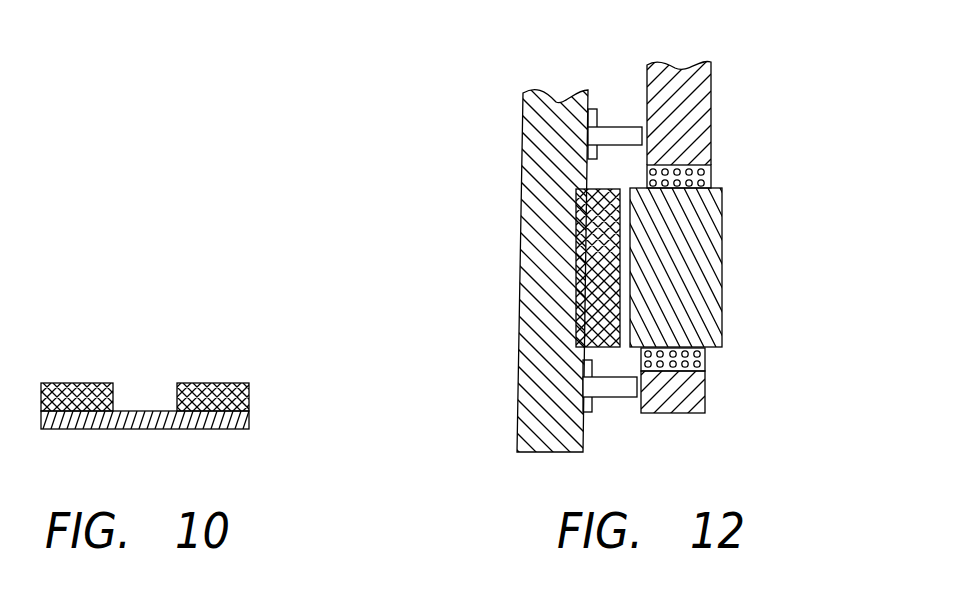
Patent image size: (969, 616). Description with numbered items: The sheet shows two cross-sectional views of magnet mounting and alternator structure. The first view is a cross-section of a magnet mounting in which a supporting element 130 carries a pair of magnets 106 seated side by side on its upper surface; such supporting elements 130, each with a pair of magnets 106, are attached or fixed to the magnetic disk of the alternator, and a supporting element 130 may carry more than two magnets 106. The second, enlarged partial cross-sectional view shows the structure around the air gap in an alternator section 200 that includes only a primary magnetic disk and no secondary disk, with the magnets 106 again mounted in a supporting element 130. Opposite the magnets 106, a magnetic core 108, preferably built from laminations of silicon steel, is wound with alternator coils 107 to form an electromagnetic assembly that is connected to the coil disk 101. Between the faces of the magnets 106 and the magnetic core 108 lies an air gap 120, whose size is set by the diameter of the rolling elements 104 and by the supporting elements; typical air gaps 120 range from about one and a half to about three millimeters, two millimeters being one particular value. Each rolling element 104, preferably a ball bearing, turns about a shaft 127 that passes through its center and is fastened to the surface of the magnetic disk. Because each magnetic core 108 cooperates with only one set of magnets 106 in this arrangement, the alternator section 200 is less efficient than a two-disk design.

In FIG. 12, the alternator section 200 is at (581, 295).
In FIG. 12, the coil disk 101 is at (712, 110).
In FIG. 12, the rolling element 104 is at (612, 124).
In FIG. 10, the magnet 106 is at (69, 382).
In FIG. 12, the magnet 106 is at (583, 175).
In FIG. 12, the alternator coil 107 is at (712, 148).
In FIG. 12, the magnetic core 108 is at (722, 258).
In FIG. 12, the air gap 120 is at (608, 379).
In FIG. 12, the shaft 127 is at (597, 109).
In FIG. 10, the supporting element 130 is at (153, 429).
In FIG. 12, the supporting element 130 is at (577, 273).